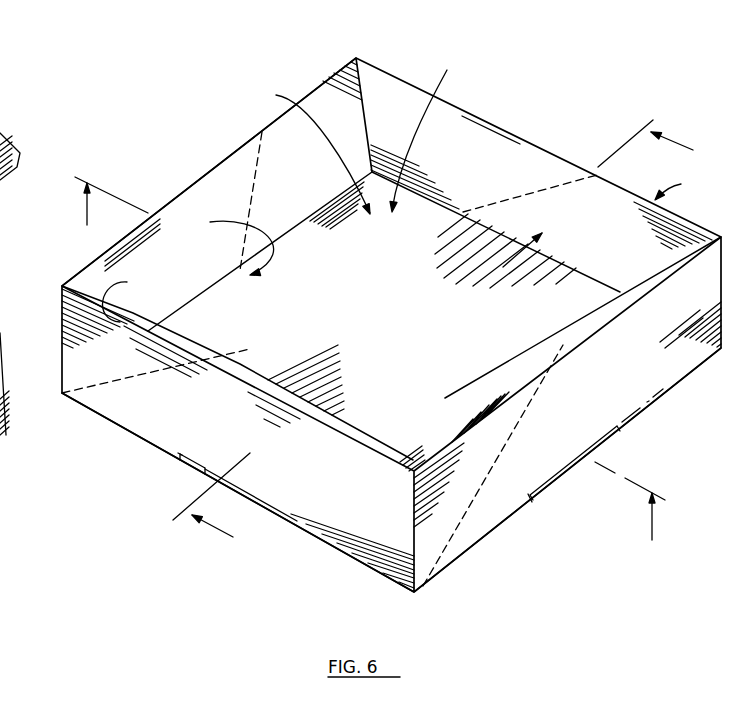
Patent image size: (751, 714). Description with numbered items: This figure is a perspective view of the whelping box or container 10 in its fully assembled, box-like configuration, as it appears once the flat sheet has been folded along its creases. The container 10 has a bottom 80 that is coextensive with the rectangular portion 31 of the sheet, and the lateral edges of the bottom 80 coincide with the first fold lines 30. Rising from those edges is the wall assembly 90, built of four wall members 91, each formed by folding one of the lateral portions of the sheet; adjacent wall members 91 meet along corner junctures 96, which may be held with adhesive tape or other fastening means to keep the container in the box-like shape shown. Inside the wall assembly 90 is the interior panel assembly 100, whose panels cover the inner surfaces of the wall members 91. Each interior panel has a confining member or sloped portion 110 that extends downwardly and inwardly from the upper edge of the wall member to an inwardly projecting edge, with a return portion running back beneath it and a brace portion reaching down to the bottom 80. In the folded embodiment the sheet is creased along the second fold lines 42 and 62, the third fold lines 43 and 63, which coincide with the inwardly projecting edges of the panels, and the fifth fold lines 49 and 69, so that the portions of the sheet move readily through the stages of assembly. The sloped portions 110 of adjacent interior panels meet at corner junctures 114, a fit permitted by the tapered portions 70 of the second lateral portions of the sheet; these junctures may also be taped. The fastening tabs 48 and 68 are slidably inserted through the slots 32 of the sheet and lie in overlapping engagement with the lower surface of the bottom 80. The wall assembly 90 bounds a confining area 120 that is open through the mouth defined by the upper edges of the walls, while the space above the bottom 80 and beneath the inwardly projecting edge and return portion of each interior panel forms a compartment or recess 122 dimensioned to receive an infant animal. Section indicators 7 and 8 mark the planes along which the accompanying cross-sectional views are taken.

The container 10 is at (470, 100).
The first fold lines 30 is at (327, 543).
The rectangular portion 31 is at (362, 308).
The slots 32 is at (215, 472).
The second fold lines 42 is at (490, 122).
The third fold lines 43 is at (463, 215).
The fastening tabs 48 is at (192, 477).
The fifth fold lines 49 is at (107, 380).
The second fold lines 62 is at (218, 162).
The third fold lines 63 is at (300, 222).
The fastening tabs 68 is at (553, 487).
The fifth fold lines 69 is at (257, 172).
The tapered portions 70 is at (370, 118).
The bottom 80 is at (308, 147).
The wall assembly 90 is at (676, 183).
The wall members 91 is at (673, 338).
The corner junctures 96 is at (356, 58).
The interior panel assembly 100 is at (504, 256).
The sloped portion 110 is at (454, 167).
The corner junctures 114 is at (358, 97).
The confining area 120 is at (431, 132).
The compartment 122 is at (225, 244).
The section line 7- 7 is at (443, 338).
The section line 8- 8 is at (370, 373).